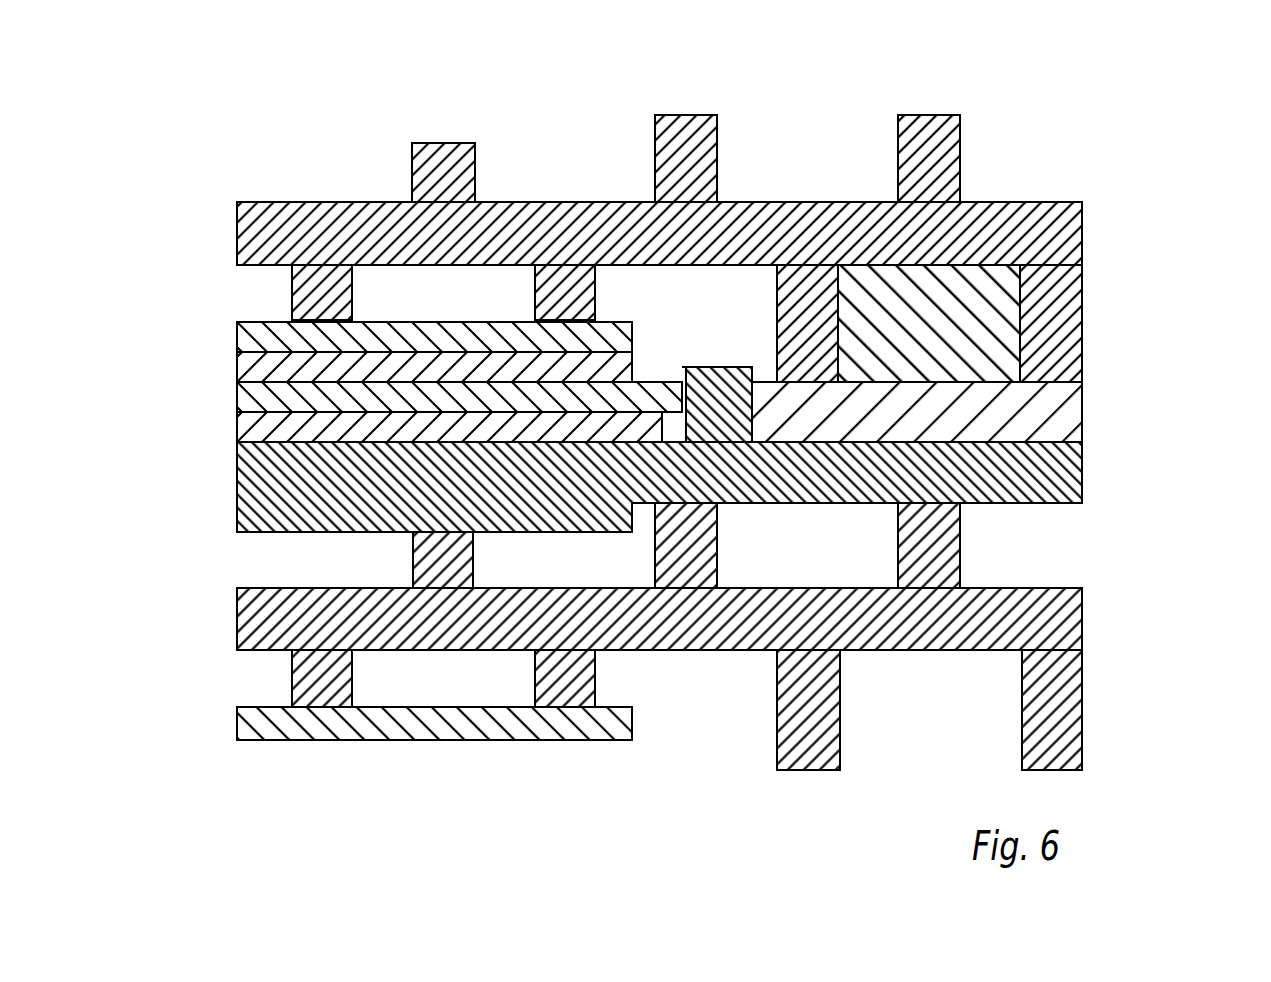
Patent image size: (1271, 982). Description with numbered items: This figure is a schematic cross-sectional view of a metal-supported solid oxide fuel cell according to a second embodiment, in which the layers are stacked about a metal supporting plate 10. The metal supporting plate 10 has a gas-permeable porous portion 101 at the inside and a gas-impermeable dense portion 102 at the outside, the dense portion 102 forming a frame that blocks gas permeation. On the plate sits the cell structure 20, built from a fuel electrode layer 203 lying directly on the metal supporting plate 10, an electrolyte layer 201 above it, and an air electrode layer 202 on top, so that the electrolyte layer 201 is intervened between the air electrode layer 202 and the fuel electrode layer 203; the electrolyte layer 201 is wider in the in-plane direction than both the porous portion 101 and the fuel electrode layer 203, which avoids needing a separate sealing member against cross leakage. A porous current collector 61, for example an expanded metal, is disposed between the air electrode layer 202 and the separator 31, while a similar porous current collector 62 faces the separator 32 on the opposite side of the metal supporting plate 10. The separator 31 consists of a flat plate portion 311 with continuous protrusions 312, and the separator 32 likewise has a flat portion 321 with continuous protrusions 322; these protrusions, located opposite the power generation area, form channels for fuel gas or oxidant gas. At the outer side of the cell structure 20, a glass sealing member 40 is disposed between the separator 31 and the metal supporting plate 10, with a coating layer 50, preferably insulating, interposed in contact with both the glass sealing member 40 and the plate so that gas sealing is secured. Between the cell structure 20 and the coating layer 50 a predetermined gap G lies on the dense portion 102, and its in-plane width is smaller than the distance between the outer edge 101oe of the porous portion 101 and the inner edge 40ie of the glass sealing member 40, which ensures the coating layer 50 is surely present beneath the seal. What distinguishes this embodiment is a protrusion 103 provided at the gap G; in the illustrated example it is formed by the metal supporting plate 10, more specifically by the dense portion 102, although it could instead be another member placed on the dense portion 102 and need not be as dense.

The metal supporting plate 10 is at (747, 308).
The porous portion 101 is at (657, 518).
The dense portion 102 is at (1068, 484).
The protrusion 103 is at (753, 416).
The outer edge of the porous portion 101oe is at (683, 455).
The cell structure 20 is at (367, 417).
The electrolyte layer 201 is at (240, 400).
The air electrode layer 202 is at (240, 375).
The fuel electrode layer 203 is at (242, 432).
The separator 31 is at (567, 248).
The flat plate portion 311 is at (262, 245).
The continuous protrusions 312 is at (425, 178).
The separator 32 is at (570, 636).
The flat portion 321 is at (255, 628).
The continuous protrusions 322 is at (413, 565).
The glass sealing member 40 is at (1082, 298).
The inner edge of the glass sealing member 40ie is at (836, 330).
The coating layer 50 is at (1082, 412).
The porous current collector 61 is at (245, 342).
The porous current collector 62 is at (248, 724).
The gap G is at (714, 368).